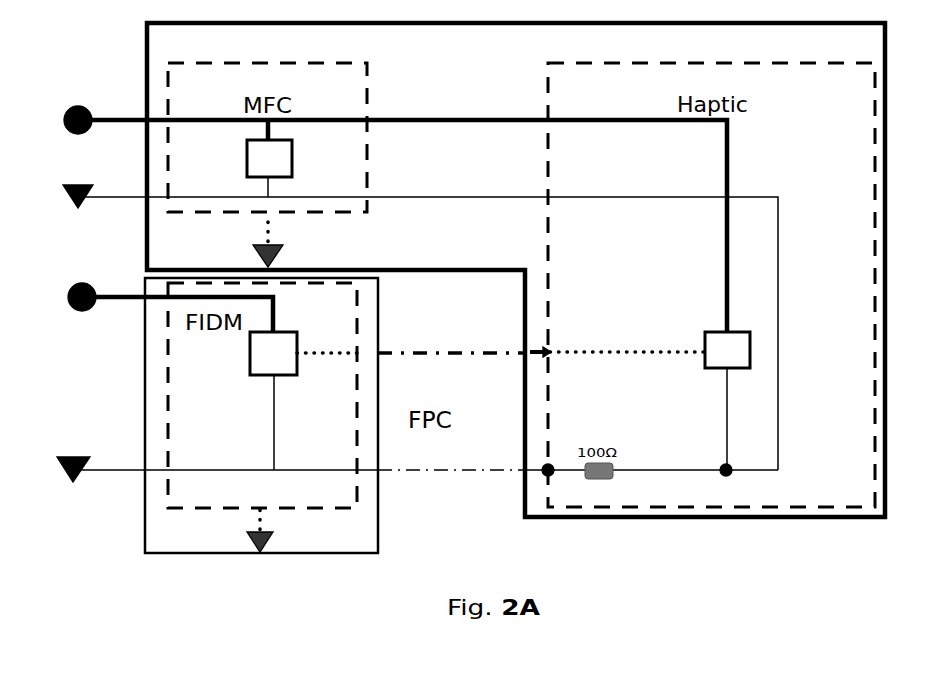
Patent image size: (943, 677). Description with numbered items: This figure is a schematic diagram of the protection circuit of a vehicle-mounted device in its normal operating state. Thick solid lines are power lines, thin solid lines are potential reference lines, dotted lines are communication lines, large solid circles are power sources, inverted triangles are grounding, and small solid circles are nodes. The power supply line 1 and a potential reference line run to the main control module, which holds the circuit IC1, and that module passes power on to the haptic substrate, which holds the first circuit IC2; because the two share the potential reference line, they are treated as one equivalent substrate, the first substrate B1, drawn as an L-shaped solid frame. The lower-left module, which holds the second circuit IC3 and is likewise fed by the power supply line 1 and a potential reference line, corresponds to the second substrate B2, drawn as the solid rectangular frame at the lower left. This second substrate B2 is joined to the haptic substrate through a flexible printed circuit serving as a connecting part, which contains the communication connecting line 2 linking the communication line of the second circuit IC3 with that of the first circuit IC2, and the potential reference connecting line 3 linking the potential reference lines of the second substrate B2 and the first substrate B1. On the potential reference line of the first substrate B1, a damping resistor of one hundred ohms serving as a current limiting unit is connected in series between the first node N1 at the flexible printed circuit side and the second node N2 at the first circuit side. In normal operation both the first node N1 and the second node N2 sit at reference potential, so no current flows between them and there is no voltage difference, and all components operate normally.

The first substrate B1 is at (267, 125).
The second substrate B2 is at (261, 415).
The circuit IC1 is at (269, 168).
The first circuit IC2 is at (727, 401).
The second circuit IC3 is at (273, 401).
The power supply line 1 is at (395, 219).
The communication connecting line 2 is at (501, 284).
The potential reference connecting line 3 is at (417, 377).
The first node N1 is at (541, 461).
The second node N2 is at (736, 462).